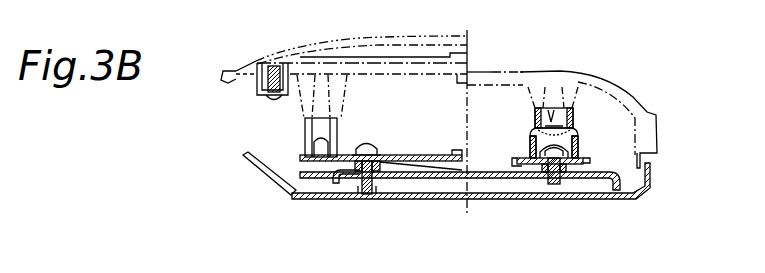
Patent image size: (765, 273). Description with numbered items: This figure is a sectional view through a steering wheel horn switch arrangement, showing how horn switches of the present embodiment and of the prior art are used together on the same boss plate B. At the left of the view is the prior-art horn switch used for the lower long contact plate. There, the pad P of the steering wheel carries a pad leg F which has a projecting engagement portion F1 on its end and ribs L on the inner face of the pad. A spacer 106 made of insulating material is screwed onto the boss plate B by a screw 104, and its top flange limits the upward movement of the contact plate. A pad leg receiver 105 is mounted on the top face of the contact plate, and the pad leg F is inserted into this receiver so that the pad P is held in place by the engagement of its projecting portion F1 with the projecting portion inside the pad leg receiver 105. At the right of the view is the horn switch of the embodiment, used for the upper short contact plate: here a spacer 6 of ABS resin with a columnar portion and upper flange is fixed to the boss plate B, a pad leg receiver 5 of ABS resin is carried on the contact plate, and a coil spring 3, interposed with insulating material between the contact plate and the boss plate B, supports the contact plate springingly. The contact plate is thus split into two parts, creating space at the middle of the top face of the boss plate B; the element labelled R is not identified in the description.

The ribs L is at (350, 92).
The pad P is at (493, 72).
The pad leg F is at (307, 127).
The pad leg receiver 105 is at (305, 145).
The screw 104 is at (370, 145).
The spacer 106 is at (385, 153).
The projecting engagement portion F1 is at (312, 157).
The boss plate B is at (406, 182).
The rail bar R is at (445, 186).
The pad leg receiver 5 is at (578, 119).
The coil spring 3 is at (578, 148).
The spacer 6 is at (578, 172).